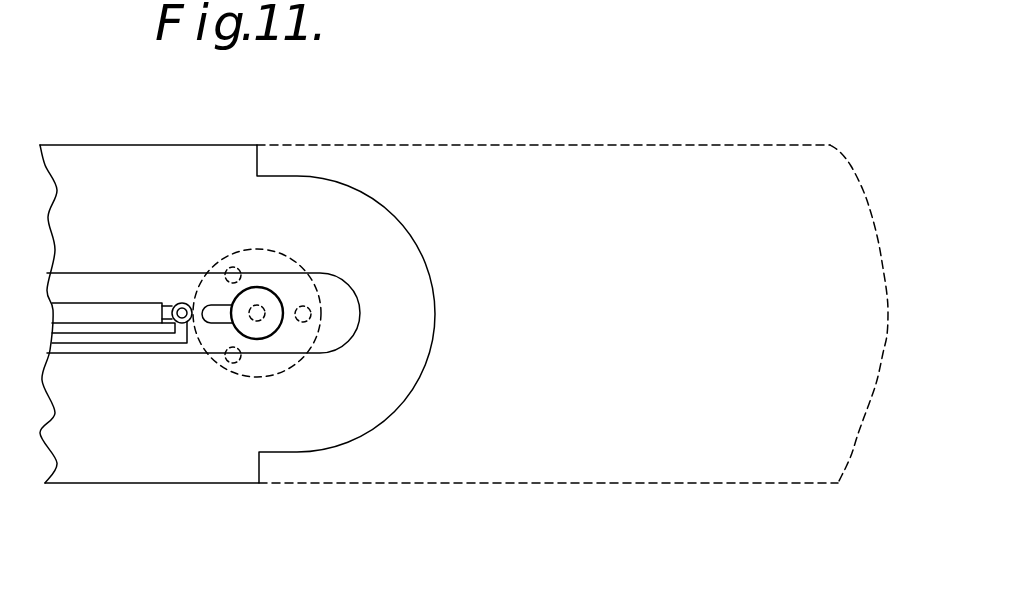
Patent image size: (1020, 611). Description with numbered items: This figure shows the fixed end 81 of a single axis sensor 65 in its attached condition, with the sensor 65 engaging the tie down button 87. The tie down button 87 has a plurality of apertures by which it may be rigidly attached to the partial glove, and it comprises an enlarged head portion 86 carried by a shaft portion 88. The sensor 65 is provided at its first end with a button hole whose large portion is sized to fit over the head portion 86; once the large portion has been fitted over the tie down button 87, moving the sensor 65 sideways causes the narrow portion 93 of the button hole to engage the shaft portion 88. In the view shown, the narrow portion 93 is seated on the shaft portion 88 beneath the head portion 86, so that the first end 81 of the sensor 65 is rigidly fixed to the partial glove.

The fixed end 81 is at (443, 566).
The single axis sensor 65 is at (358, 277).
The head portion 86 is at (262, 289).
The narrow portion 93 is at (213, 305).
The tie down button 87 is at (236, 387).
The shaft portion 88 is at (276, 341).